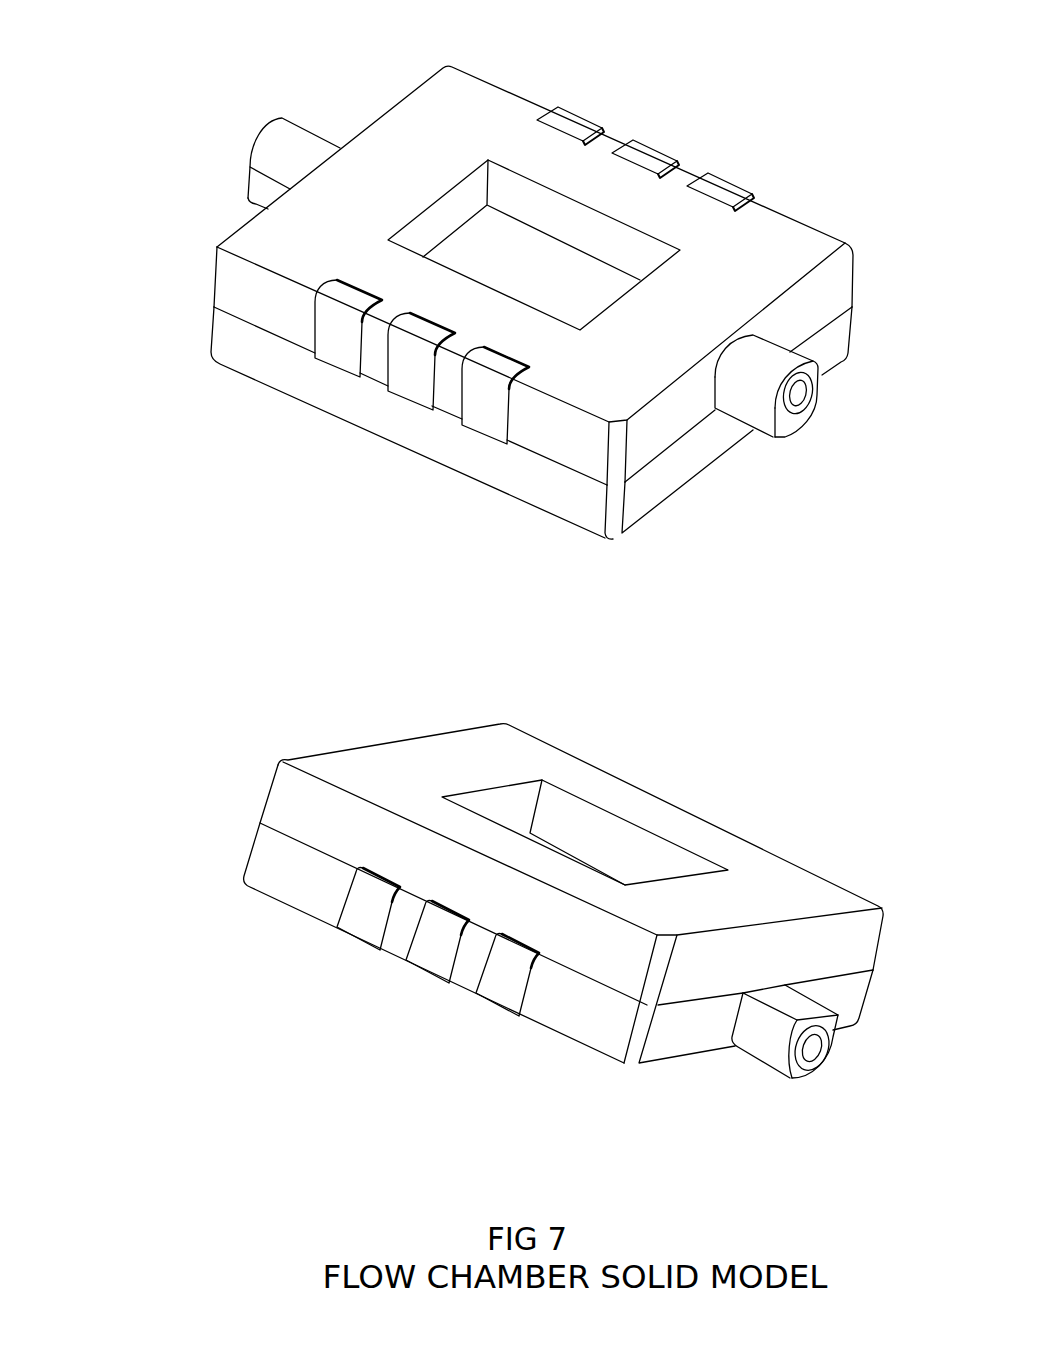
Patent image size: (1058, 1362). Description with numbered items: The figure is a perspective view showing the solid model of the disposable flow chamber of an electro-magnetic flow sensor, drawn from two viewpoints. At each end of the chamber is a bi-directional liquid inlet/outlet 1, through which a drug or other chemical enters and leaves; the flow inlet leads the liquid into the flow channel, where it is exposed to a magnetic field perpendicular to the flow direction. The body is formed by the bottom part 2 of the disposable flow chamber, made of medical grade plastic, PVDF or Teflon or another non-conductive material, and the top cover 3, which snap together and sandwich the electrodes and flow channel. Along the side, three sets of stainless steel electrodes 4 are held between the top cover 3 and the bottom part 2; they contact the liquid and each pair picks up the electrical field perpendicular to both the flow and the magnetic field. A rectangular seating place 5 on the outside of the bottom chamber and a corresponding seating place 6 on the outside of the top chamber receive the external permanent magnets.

The bi-directional liquid inlet/outlet 1 is at (255, 145).
The bottom part of the disposable flow chamber 2 is at (233, 232).
The top cover of flow chamber 3 is at (258, 382).
The stainless steel electrodes 4 is at (725, 192).
The seating place of the permanent magnet external the bottom flow chamber 5 is at (495, 248).
The seating place of the permanent magnet external the top flow chamber 6 is at (595, 848).